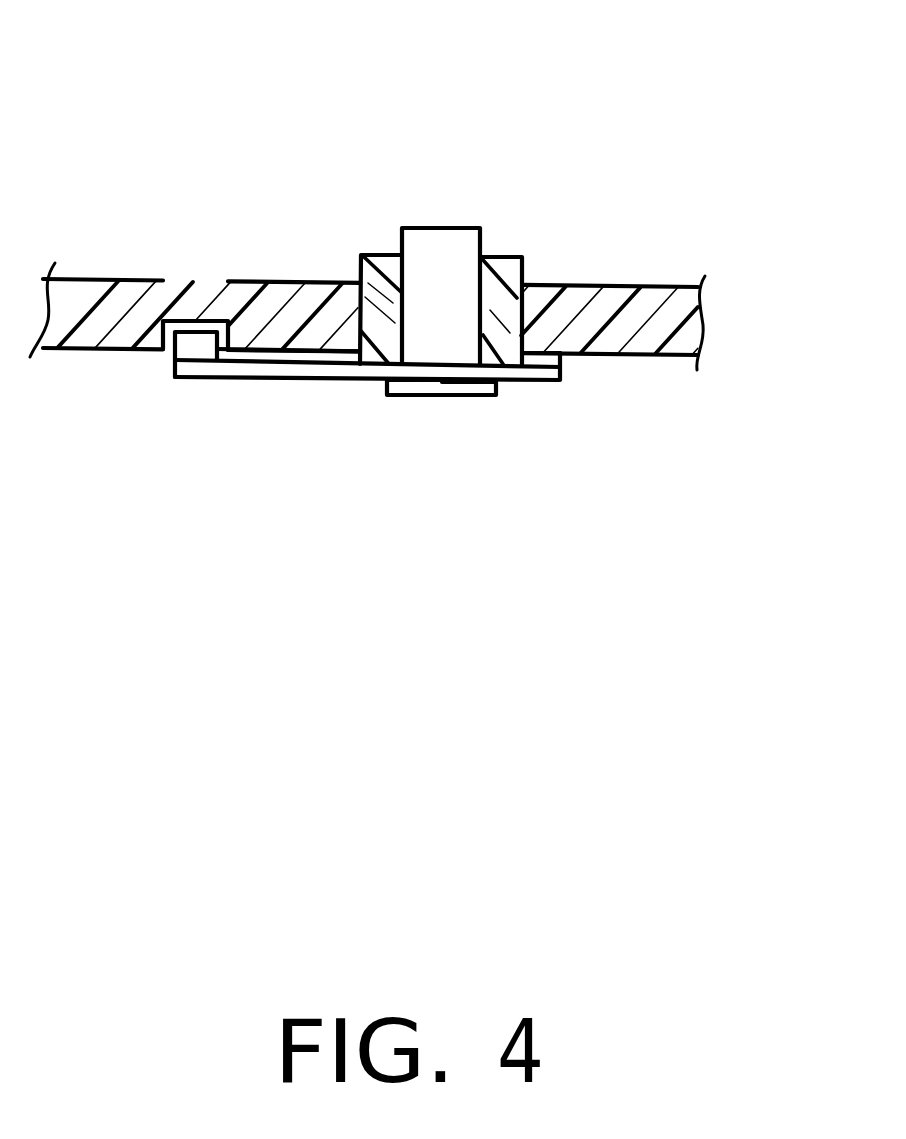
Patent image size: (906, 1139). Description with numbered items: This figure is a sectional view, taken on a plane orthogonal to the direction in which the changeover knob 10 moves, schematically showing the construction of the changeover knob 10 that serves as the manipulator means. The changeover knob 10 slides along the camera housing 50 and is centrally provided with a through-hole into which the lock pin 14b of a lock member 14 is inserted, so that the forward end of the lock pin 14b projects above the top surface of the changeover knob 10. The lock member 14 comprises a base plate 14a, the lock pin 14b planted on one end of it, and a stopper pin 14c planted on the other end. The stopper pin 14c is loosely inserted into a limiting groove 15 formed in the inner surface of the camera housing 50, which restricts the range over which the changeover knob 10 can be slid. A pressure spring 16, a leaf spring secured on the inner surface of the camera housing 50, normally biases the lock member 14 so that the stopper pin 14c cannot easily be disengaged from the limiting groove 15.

The changeover knob 10 is at (360, 260).
The lock member 14 is at (345, 373).
The base plate 14a is at (248, 372).
The lock pin 14b is at (458, 247).
The stopper pin 14c is at (185, 351).
The limiting groove 15 is at (170, 324).
The pressure spring 16 is at (445, 395).
The camera housing 50 is at (652, 292).